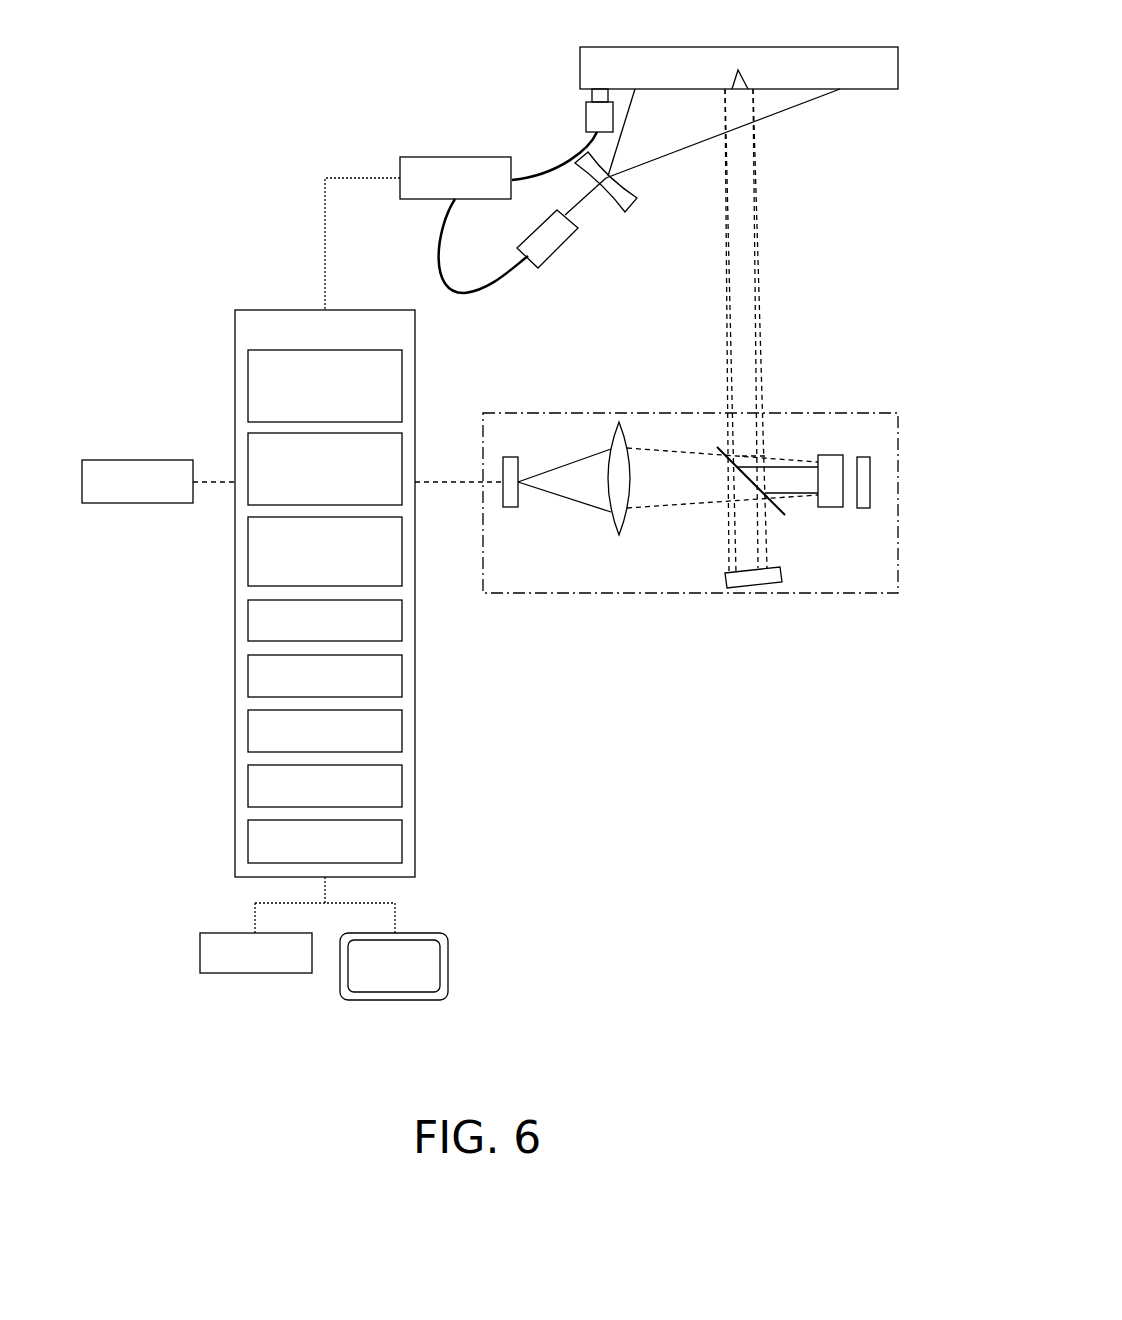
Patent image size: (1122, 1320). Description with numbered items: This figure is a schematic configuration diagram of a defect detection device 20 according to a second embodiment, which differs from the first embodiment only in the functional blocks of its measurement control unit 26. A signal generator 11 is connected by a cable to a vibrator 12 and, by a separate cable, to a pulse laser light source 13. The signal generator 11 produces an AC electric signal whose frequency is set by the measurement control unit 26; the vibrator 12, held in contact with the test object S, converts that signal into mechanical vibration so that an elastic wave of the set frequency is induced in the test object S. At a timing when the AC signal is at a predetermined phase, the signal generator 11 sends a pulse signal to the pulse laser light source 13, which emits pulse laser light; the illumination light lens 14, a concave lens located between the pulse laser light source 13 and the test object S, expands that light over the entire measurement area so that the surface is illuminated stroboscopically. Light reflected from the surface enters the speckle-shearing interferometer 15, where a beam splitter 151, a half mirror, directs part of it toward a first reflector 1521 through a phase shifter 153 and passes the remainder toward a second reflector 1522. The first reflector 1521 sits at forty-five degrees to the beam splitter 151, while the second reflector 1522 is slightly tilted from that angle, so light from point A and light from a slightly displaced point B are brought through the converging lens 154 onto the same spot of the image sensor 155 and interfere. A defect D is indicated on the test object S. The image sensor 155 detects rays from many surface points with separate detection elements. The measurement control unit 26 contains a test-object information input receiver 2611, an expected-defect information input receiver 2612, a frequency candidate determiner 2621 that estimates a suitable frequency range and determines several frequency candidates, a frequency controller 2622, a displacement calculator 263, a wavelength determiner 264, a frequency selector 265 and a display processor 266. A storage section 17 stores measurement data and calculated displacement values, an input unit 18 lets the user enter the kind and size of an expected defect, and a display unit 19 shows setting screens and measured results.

The test object S is at (870, 68).
The point A is at (752, 89).
The point B is at (725, 89).
The defect D is at (740, 72).
The signal generator 11 is at (435, 175).
The vibrator 12 is at (587, 115).
The pulse laser light source 13 is at (553, 242).
The illumination light lens 14 is at (622, 200).
The speckle-shearing interferometer 15 is at (898, 593).
The beam splitter 151 is at (727, 457).
The first reflector 1521 is at (872, 482).
The second reflector 1522 is at (760, 580).
The phase shifter 153 is at (830, 455).
The converging lens 154 is at (613, 442).
The image sensor 155 is at (513, 455).
The storage section 17 is at (82, 460).
The input unit 18 is at (200, 973).
The display unit 19 is at (443, 1000).
The defect detection device 20 is at (858, 980).
The measurement control unit 26 is at (235, 310).
The test-object information input receiver 2611 is at (248, 350).
The expected-defect information input receiver 2612 is at (248, 433).
The frequency candidate determiner 2621 is at (248, 586).
The frequency controller 2622 is at (248, 641).
The displacement calculator 263 is at (248, 697).
The wavelength determiner 264 is at (248, 752).
The frequency selector 265 is at (248, 807).
The display processor 266 is at (246, 864).